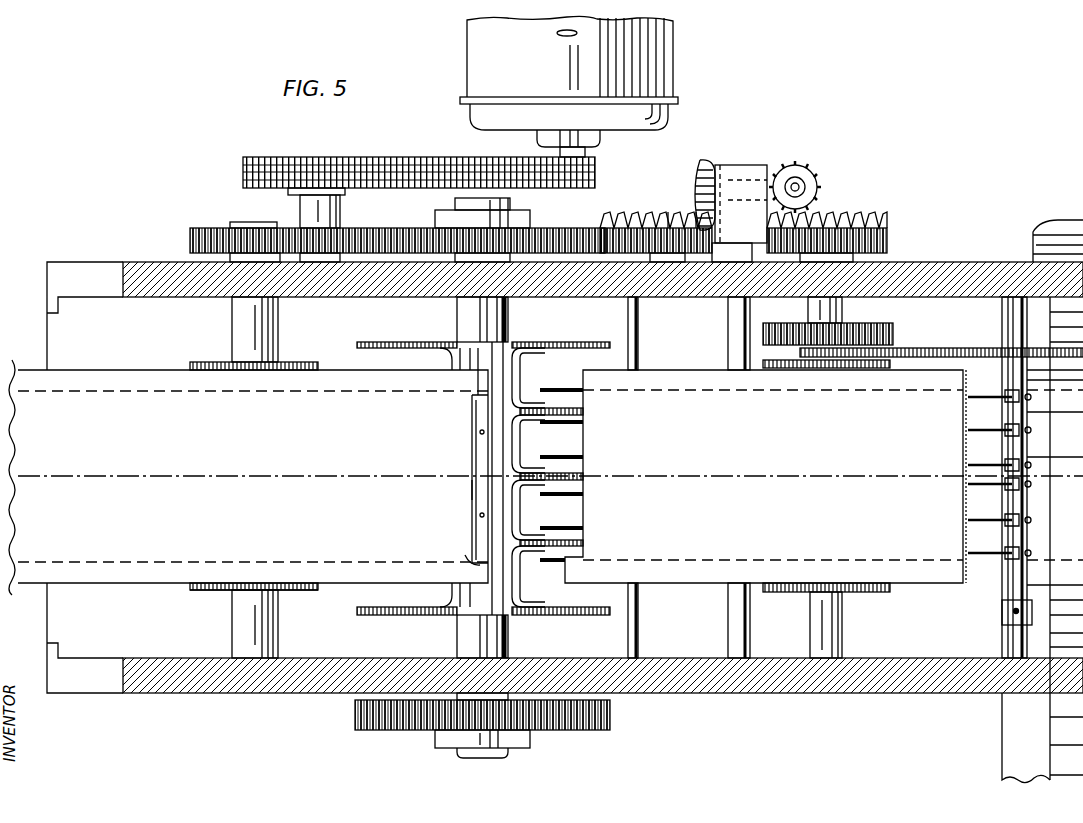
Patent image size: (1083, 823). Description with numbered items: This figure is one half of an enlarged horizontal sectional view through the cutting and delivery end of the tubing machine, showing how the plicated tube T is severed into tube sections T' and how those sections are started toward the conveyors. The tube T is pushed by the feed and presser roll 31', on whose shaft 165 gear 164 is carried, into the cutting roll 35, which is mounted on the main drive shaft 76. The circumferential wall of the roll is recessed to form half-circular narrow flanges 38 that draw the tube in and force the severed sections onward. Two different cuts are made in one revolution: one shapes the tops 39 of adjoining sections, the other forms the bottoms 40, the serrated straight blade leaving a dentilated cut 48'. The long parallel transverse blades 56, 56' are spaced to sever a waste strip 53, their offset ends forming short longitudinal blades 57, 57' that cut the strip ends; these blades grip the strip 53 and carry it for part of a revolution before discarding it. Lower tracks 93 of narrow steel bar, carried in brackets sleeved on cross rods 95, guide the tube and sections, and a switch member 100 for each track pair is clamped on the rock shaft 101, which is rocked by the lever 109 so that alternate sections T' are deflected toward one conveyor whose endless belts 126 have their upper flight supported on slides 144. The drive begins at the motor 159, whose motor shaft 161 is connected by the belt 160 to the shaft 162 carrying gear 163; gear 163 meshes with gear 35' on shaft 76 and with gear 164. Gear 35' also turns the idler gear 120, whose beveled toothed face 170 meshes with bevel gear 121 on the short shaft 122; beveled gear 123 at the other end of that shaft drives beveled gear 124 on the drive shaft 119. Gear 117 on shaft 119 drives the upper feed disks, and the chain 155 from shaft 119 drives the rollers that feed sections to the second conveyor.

The motor 159 is at (673, 85).
The belt 160 is at (422, 150).
The motor shaft 161 is at (600, 150).
The shaft 162 is at (340, 210).
The gear 163 is at (380, 228).
The gear 164 is at (190, 242).
The shaft 165 is at (232, 332).
The beveled toothed face 170 is at (620, 220).
The idler gear 120 is at (672, 204).
The bevel gear 121 is at (703, 160).
The short shaft 122 is at (755, 172).
The beveled gear 123 is at (805, 158).
The beveled gear 124 is at (848, 212).
The endless belts 126 is at (1033, 250).
The gear 117 is at (893, 332).
The chain 155 is at (956, 348).
The main drive shaft 76 is at (508, 318).
The half-circular narrow flanges 38 is at (545, 348).
The cutting roll 35 is at (561, 624).
The gear 35' is at (579, 225).
The short cutting blade 57 is at (464, 468).
The short cutting blade 57' is at (459, 548).
The waste strip 53 is at (480, 422).
The cutting blade 56 is at (452, 429).
The cutting blade 56' is at (547, 477).
The tops 39 is at (472, 490).
The lower tracks 93 is at (569, 405).
The cross rods 95 is at (728, 620).
The drive shaft 119 is at (812, 628).
The feed and presser roll 31' is at (240, 607).
The bottoms 40 is at (968, 428).
The dentilated cut 48' is at (975, 475).
The switch member 100 is at (1015, 522).
The rock shaft 101 is at (1002, 645).
The lever 109 is at (1002, 612).
The slides 144 is at (1002, 732).
The tube T is at (543, 472).
The tube sections T' is at (765, 476).